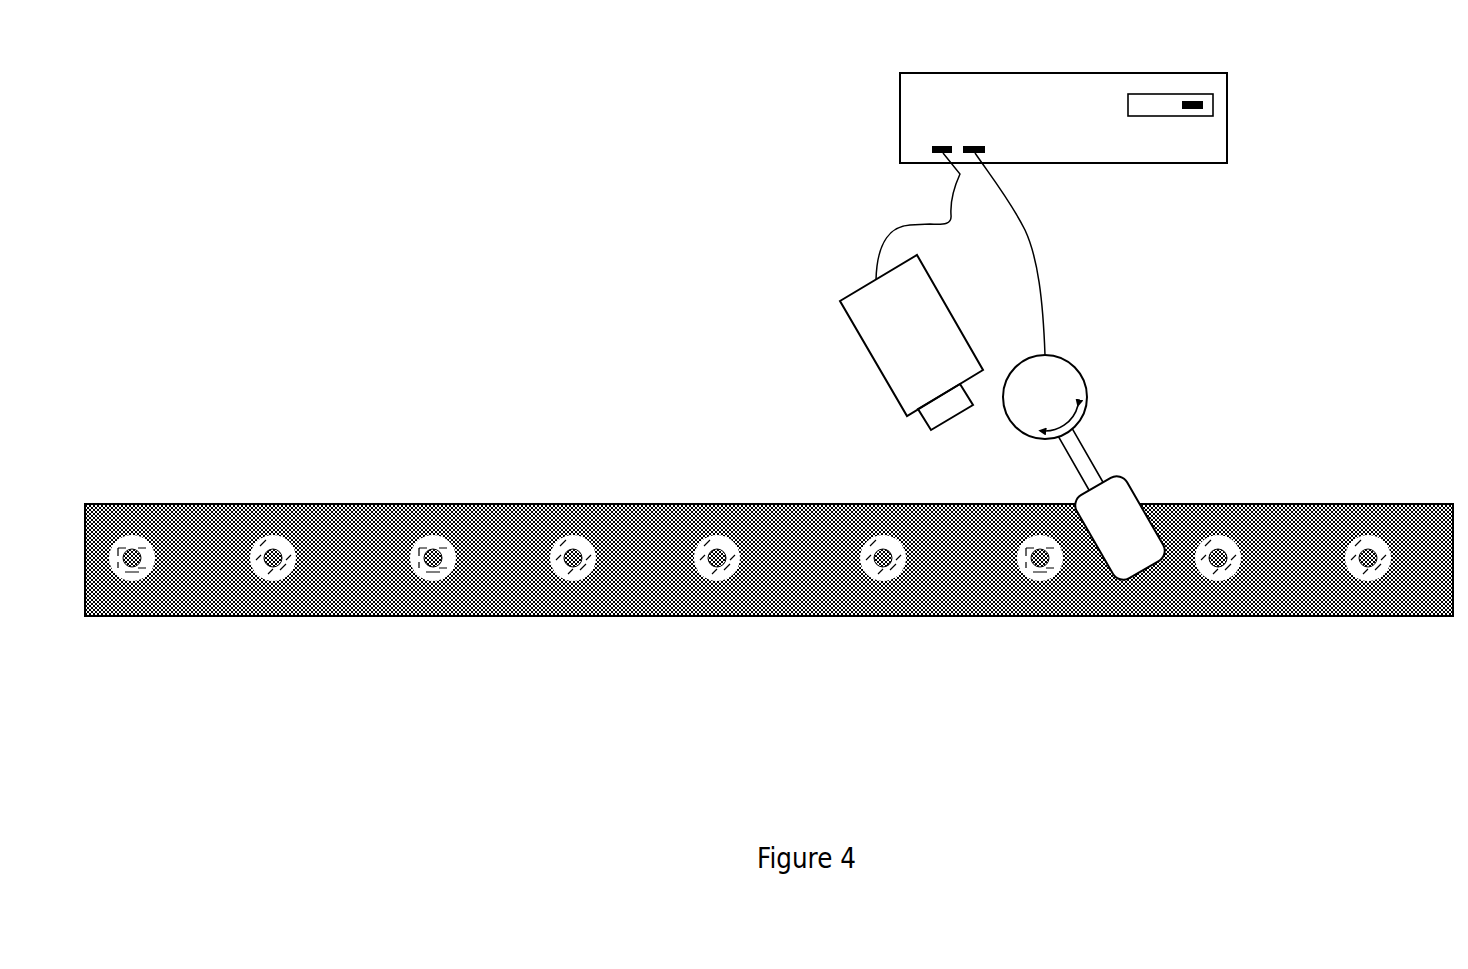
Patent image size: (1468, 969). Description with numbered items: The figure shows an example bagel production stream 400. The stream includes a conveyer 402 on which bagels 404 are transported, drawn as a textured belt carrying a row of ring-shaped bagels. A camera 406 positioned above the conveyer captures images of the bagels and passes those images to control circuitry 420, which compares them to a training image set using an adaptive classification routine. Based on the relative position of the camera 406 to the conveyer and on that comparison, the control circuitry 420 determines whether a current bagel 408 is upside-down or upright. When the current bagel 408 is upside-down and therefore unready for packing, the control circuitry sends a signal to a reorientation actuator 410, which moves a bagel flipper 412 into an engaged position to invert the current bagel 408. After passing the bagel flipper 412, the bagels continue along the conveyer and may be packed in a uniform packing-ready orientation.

The bagel production stream 400 is at (163, 70).
The conveyer 402 is at (178, 504).
The bagels 404 is at (136, 536).
The camera 406 is at (868, 278).
The current bagel 408 is at (1044, 536).
The reorientation actuator 410 is at (1041, 353).
The bagel flipper 412 is at (1080, 492).
The control circuitry 420 is at (920, 72).